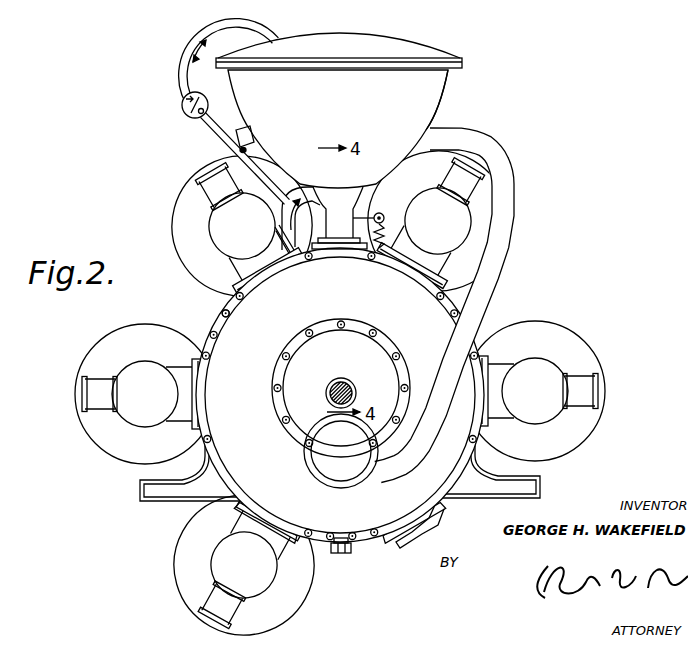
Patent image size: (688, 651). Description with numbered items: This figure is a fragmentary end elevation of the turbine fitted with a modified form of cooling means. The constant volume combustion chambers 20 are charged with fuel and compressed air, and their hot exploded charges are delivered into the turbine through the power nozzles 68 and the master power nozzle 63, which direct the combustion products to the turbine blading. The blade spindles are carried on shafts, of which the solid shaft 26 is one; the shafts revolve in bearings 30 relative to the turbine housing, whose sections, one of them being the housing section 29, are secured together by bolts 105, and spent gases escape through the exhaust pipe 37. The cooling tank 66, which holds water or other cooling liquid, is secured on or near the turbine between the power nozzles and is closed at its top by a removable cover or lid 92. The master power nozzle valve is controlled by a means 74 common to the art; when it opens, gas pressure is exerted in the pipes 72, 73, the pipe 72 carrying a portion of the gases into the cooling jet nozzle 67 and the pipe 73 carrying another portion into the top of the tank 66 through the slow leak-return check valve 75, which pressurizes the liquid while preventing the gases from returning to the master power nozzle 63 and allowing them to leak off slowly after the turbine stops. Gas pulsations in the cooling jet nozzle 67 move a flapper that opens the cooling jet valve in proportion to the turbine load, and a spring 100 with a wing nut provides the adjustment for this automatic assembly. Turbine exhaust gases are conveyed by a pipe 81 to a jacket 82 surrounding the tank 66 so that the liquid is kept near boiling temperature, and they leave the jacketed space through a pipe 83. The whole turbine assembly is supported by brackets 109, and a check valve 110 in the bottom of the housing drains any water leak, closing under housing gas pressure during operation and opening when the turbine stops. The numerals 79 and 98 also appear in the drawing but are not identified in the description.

The constant volume combustion chamber 20 is at (175, 206).
The shaft 26 is at (353, 393).
The turbine housing section 29 is at (340, 395).
The bearing 30 is at (331, 391).
The exhaust pipe 37 is at (341, 388).
The master power nozzle 63 is at (240, 266).
The tank 66 is at (339, 123).
The cooling jet nozzle 67 is at (362, 197).
The power nozzle 68 is at (498, 368).
The pipe 72 is at (297, 219).
The pipe 73 is at (212, 137).
The valve controlling means 74 is at (200, 170).
The slow leak-return check valve 75 is at (182, 108).
The inlet flange 79 is at (86, 399).
The pipe 81 is at (478, 304).
The jacket 82 is at (431, 98).
The pipe 83 is at (241, 142).
The removable cover or lid 92 is at (366, 46).
The valve 98 is at (381, 216).
The spring 100 is at (369, 249).
The bolts 105 is at (216, 311).
The brackets 109 is at (139, 489).
The check valve 110 is at (335, 554).